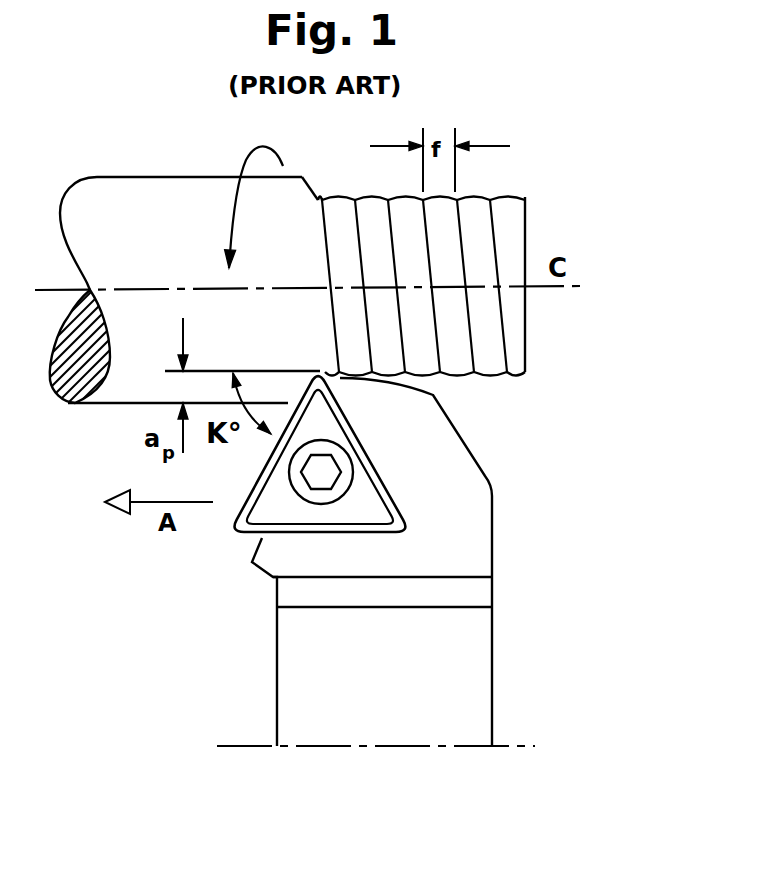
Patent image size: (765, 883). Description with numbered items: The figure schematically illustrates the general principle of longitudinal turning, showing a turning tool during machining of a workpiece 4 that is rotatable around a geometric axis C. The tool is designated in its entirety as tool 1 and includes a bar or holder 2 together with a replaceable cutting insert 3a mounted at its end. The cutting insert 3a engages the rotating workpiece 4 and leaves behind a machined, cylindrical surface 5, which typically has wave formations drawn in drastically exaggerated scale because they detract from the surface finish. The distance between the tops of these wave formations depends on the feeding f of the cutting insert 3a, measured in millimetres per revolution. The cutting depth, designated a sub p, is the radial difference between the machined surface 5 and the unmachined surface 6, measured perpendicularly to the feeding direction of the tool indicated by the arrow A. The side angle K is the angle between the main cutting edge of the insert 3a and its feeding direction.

The turning tool 1 is at (513, 548).
The bar or holder 2 is at (473, 660).
The replaceable cutting insert 3a is at (232, 530).
The workpiece 4 is at (160, 173).
The machined cylindrical surface 5 is at (478, 373).
The unmachined surface 6 is at (123, 405).